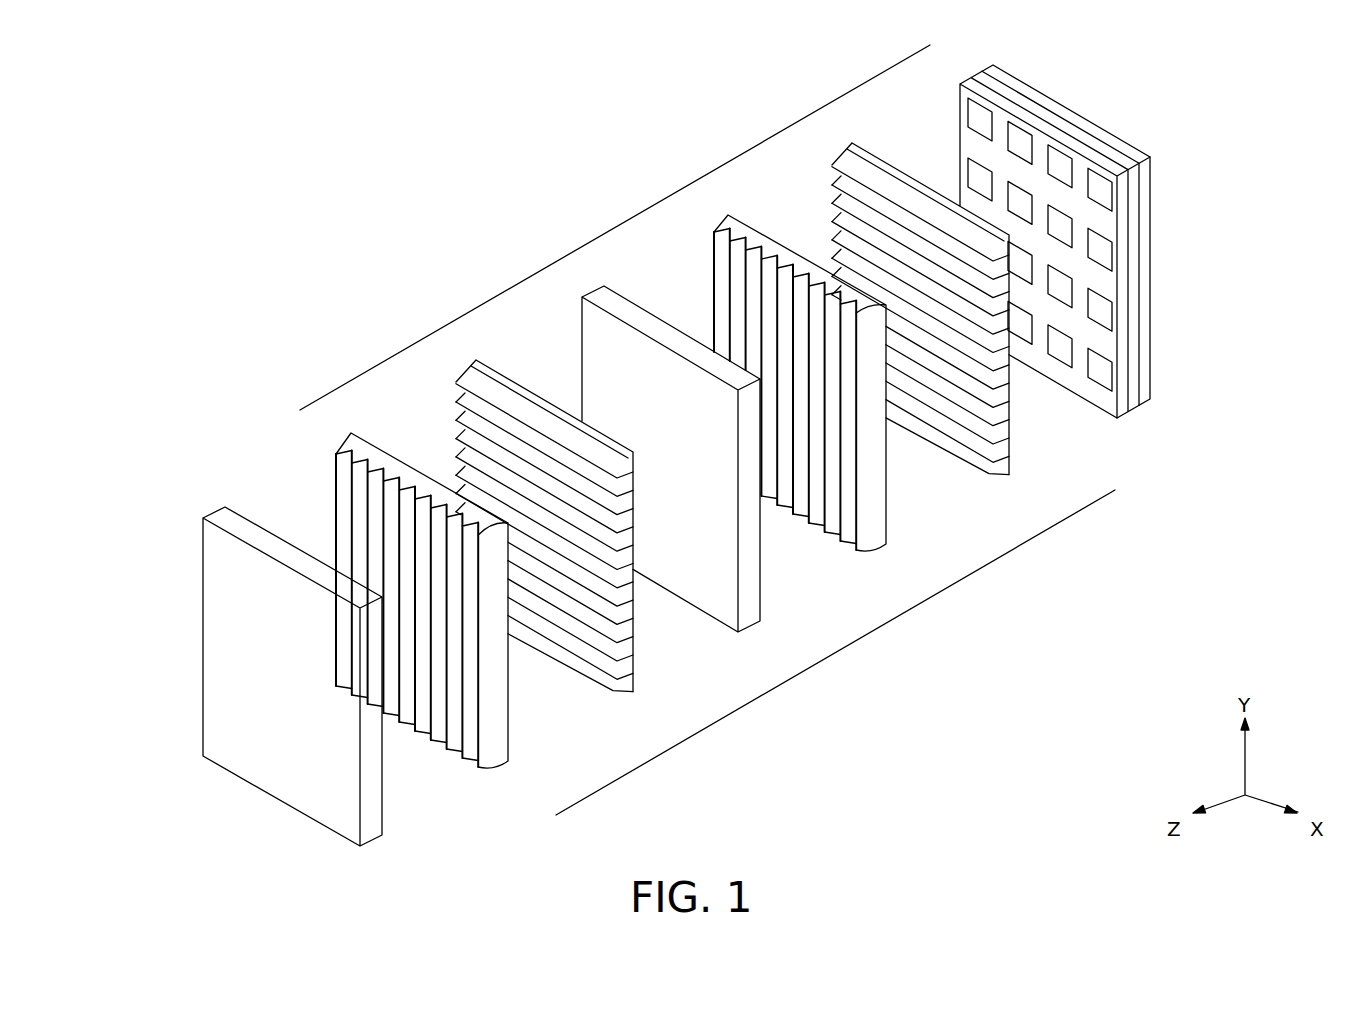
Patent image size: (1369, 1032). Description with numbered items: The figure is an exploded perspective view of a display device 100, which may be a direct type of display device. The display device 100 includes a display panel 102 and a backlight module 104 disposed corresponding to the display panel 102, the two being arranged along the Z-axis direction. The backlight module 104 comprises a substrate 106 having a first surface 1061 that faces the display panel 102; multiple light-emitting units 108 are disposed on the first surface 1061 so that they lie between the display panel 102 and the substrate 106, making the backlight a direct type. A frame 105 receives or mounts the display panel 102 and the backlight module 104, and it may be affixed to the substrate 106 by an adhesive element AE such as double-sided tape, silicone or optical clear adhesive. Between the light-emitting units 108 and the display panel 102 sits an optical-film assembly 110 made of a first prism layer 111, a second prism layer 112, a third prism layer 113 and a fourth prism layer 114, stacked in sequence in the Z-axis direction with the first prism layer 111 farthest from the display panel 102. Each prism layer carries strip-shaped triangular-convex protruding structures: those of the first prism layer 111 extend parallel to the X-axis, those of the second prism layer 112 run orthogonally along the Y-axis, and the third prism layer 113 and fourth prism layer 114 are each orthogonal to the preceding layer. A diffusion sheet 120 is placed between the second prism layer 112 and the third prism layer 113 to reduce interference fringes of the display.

The display device 100 is at (118, 58).
The display panel 102 is at (232, 521).
The backlight module 104 is at (633, 229).
The optical-film assembly 110 is at (828, 656).
The first prism layer 111 is at (1007, 456).
The second prism layer 112 is at (886, 530).
The third prism layer 113 is at (633, 677).
The fourth prism layer 114 is at (506, 752).
The diffusion sheet 120 is at (760, 605).
The frame 105 is at (1148, 182).
The substrate 106 is at (1148, 222).
The first surface 1061 is at (1073, 152).
The light-emitting units 108 is at (966, 120).
The adhesive element AE is at (1142, 290).